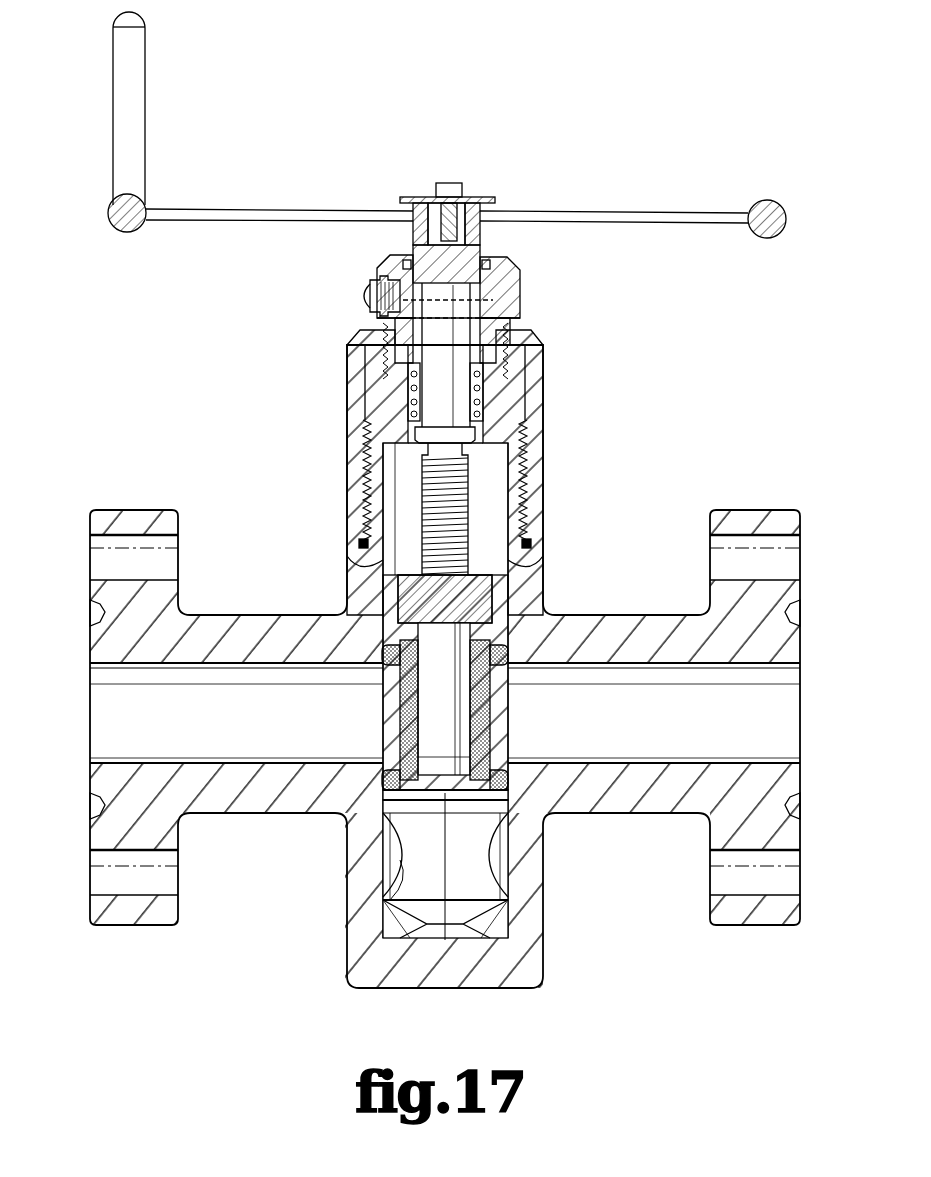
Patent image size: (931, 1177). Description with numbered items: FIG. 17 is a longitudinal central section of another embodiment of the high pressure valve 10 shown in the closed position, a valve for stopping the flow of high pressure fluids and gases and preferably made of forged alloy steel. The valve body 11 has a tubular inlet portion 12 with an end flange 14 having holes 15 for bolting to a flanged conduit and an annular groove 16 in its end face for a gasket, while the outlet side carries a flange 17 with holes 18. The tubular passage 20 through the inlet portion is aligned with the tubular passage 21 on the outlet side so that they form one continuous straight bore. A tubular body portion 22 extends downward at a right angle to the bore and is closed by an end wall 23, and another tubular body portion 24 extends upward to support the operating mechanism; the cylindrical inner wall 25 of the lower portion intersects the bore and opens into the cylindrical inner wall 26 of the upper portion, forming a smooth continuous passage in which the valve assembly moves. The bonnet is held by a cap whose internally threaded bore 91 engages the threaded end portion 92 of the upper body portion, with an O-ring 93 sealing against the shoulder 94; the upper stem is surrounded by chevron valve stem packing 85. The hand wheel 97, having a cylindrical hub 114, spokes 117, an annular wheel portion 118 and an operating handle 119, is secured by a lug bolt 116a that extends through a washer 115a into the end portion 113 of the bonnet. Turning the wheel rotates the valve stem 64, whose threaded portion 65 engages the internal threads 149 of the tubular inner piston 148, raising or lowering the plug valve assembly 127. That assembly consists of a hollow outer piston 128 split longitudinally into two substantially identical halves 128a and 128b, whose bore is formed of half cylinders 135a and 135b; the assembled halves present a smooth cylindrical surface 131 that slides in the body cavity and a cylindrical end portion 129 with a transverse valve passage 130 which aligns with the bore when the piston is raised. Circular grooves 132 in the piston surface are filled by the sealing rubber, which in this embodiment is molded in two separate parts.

The high pressure valve 10 is at (436, 666).
The valve body 11 is at (429, 634).
The tubular inlet portion 12 is at (220, 615).
The end flange 14 is at (143, 510).
The holes or apertures 15 is at (118, 543).
The annular groove 16 is at (96, 616).
The flange 17 is at (740, 510).
The holes or apertures 18 is at (790, 540).
The tubular passage 20 is at (141, 668).
The tubular passage 21 is at (601, 668).
The tubular body portion 22 is at (355, 898).
The end wall 23 is at (445, 988).
The tubular body portion 24 is at (347, 566).
The cylindrical inner wall 25 is at (515, 880).
The cylindrical inner wall 26 is at (508, 561).
The valve stem 64 is at (492, 487).
The threaded portion 65 is at (478, 522).
The valve stem packing 85 is at (512, 397).
The internally threaded enlarged bore 91 is at (362, 470).
The threaded end portion 92 is at (368, 440).
The O-ring or gasket 93 is at (364, 540).
The shoulder 94 is at (365, 557).
The hand wheel 97 is at (467, 125).
The end portion 113 is at (470, 228).
The cylindrical hub 114 is at (414, 228).
The washer 115a is at (410, 198).
The lug bolt 116a is at (449, 183).
The spokes 117 is at (563, 211).
The annular wheel portion 118 is at (781, 203).
The operating handle 119 is at (138, 117).
The plug valve assembly 127 is at (443, 715).
The outer piston 128 is at (512, 724).
The piston half 128a is at (510, 700).
The piston half 128b is at (398, 694).
The cylindrical end portion 129 is at (530, 915).
The valve passage 130 is at (395, 860).
The smooth cylindrical surface 131 is at (545, 617).
The circular grooves 132 is at (512, 778).
The half cylinder 135a is at (500, 744).
The half cylinder 135b is at (408, 716).
The inner piston 148 is at (398, 600).
The internal threads 149 is at (460, 578).